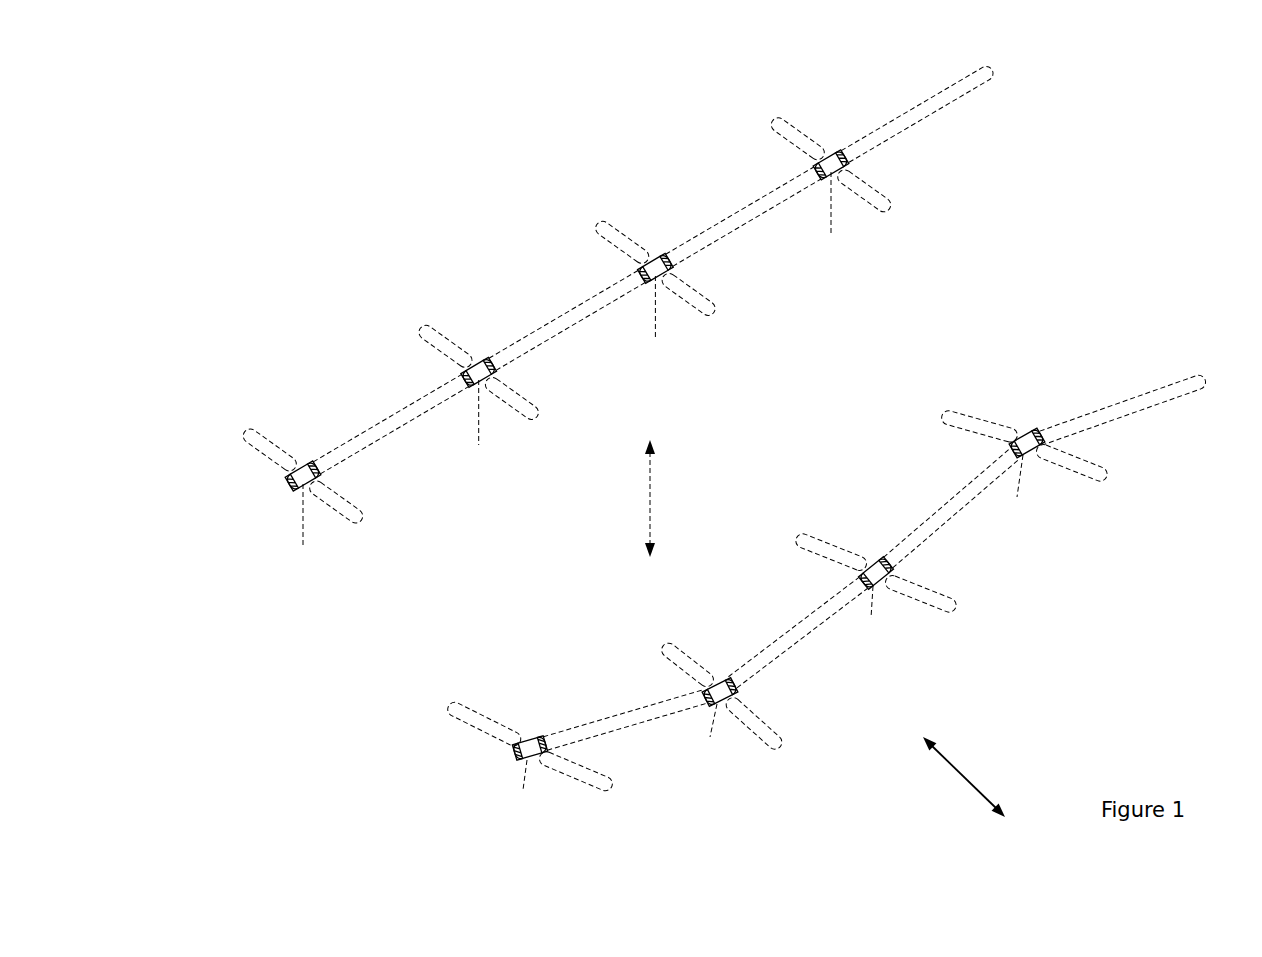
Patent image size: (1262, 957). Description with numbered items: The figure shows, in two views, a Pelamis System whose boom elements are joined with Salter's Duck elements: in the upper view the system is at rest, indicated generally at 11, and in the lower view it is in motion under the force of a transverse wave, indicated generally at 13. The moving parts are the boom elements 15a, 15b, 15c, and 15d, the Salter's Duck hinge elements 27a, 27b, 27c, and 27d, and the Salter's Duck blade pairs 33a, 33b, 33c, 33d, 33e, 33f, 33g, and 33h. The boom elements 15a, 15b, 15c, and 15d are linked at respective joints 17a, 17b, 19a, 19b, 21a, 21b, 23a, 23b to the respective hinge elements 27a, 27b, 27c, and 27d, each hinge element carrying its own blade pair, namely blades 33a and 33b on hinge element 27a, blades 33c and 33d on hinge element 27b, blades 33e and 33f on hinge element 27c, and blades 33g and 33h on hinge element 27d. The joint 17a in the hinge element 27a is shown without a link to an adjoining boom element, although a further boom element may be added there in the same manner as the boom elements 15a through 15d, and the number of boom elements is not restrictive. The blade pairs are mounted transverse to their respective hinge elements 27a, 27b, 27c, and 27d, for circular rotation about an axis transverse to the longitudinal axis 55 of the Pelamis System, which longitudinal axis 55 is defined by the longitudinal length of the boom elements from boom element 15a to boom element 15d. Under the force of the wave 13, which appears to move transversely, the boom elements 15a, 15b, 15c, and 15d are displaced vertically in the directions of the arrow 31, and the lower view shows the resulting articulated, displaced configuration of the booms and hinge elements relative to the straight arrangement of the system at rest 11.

The Pelamis System at rest 11 is at (553, 155).
The transverse wave motion 13 is at (965, 775).
The boom element 15a is at (387, 428).
The boom element 15b is at (563, 323).
The boom element 15c is at (740, 220).
The boom element 15d is at (918, 118).
The joint 17a is at (283, 480).
The joint 17b is at (312, 460).
The joint 19a is at (460, 377).
The joint 19b is at (488, 358).
The joint 21a is at (638, 270).
The joint 21b is at (665, 252).
The joint 23a is at (817, 168).
The joint 23b is at (850, 153).
The Salter's Duck hinge element 27a is at (404, 649).
The Salter's Duck hinge element 27b is at (589, 569).
The Salter's Duck hinge element 27c is at (760, 460).
The Salter's Duck hinge element 27d is at (921, 345).
The arrow 31 is at (650, 499).
The Salter's Duck blade 33a is at (350, 517).
The Salter's Duck blade 33b is at (255, 433).
The Salter's Duck blade 33c is at (525, 413).
The Salter's Duck blade 33d is at (432, 330).
The Salter's Duck blade 33e is at (703, 312).
The Salter's Duck blade 33f is at (605, 223).
The Salter's Duck blade 33g is at (882, 207).
The Salter's Duck blade 33h is at (785, 120).
The longitudinal axis 55 is at (272, 502).